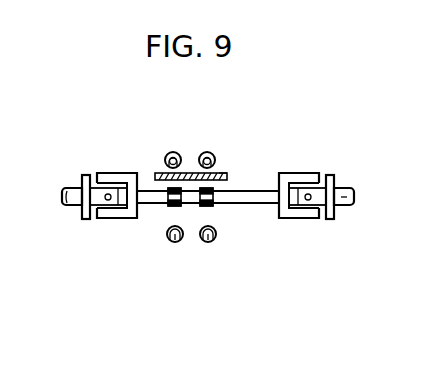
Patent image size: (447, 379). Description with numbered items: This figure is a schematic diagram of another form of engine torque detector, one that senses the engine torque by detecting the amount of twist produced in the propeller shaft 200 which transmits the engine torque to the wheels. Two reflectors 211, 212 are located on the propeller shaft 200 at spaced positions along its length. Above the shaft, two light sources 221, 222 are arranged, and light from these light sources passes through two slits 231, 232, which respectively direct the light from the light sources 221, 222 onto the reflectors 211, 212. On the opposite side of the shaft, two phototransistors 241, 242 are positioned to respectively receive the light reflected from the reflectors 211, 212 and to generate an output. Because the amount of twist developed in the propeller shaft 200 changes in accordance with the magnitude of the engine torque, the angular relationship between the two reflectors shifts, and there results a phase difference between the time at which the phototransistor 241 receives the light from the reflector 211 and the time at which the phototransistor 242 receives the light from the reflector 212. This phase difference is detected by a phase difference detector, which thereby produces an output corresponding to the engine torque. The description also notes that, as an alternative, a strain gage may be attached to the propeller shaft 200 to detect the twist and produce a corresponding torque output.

The propeller shaft 200 is at (263, 195).
The reflector 211 is at (176, 207).
The reflector 212 is at (205, 207).
The light source 221 is at (174, 152).
The light source 222 is at (207, 152).
The slit 231 is at (160, 174).
The slit 232 is at (224, 174).
The phototransistor 241 is at (175, 243).
The phototransistor 242 is at (208, 243).